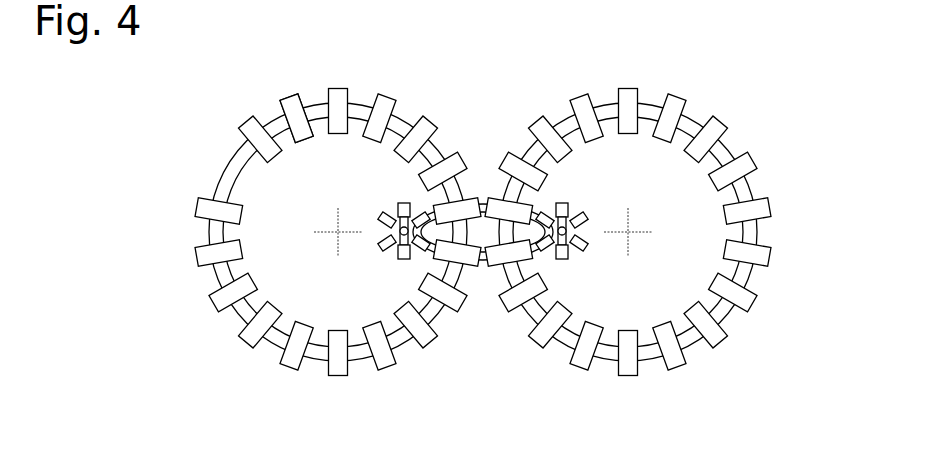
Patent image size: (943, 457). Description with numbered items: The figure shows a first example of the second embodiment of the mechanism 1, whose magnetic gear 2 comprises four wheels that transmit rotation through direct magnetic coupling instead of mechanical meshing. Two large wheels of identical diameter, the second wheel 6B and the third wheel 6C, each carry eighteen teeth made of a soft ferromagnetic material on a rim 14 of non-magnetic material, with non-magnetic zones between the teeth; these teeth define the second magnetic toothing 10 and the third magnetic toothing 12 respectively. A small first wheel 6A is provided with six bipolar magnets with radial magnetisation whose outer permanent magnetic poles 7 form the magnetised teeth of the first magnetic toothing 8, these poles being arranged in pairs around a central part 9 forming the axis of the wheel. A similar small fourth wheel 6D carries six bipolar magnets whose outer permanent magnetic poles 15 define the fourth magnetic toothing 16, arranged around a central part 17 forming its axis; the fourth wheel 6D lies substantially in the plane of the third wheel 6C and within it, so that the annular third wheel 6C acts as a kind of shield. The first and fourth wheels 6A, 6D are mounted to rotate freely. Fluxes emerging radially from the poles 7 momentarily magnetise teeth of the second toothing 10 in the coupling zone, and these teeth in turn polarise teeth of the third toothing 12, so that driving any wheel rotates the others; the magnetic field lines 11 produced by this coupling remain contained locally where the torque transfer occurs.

The mechanism 1 is at (128, 166).
The magnetic gear 2 is at (309, 197).
The first wheel 6A is at (372, 271).
The second wheel 6B is at (316, 85).
The third wheel 6C is at (655, 84).
The fourth wheel 6D is at (594, 272).
The permanent magnetic poles 7 is at (365, 267).
The first magnetic toothing 8 is at (370, 241).
The central part 9 is at (404, 262).
The second magnetic toothing 10 is at (218, 299).
The magnetic field lines 11 is at (483, 201).
The third magnetic toothing 12 is at (647, 200).
The rim 14 is at (358, 100).
The permanent magnetic poles 15 is at (605, 267).
The fourth magnetic toothing 16 is at (596, 241).
The central part 17 is at (562, 262).